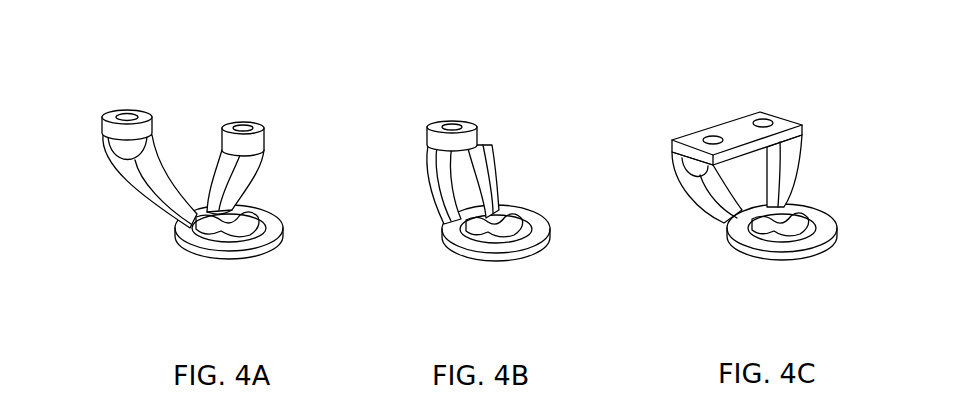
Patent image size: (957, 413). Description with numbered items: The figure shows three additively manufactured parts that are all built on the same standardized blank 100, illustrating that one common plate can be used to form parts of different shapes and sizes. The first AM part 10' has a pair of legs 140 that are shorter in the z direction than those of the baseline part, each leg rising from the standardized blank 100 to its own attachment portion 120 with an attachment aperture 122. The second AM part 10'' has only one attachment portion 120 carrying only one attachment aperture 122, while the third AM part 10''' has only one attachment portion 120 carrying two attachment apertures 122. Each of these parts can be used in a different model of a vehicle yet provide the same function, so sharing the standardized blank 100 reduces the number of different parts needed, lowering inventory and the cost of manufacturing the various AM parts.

In FIG. 4A, the AM part 10' is at (193, 162).
In FIG. 4B, the AM part 10'' is at (461, 163).
In FIG. 4C, the AM part 10''' is at (750, 156).
In FIG. 4A, the standardized blank 100 is at (193, 262).
In FIG. 4B, the standardized blank 100 is at (450, 258).
In FIG. 4C, the standardized blank 100 is at (730, 255).
In FIG. 4A, the attachment portion 120 is at (105, 103).
In FIG. 4B, the attachment portion 120 is at (430, 120).
In FIG. 4C, the attachment portion 120 is at (688, 128).
In FIG. 4A, the attachment aperture 122 is at (127, 113).
In FIG. 4B, the attachment aperture 122 is at (453, 124).
In FIG. 4C, the attachment aperture 122 is at (713, 136).
In FIG. 4A, the legs 140 is at (120, 184).
In FIG. 4B, the legs 140 is at (425, 195).
In FIG. 4C, the legs 140 is at (697, 203).